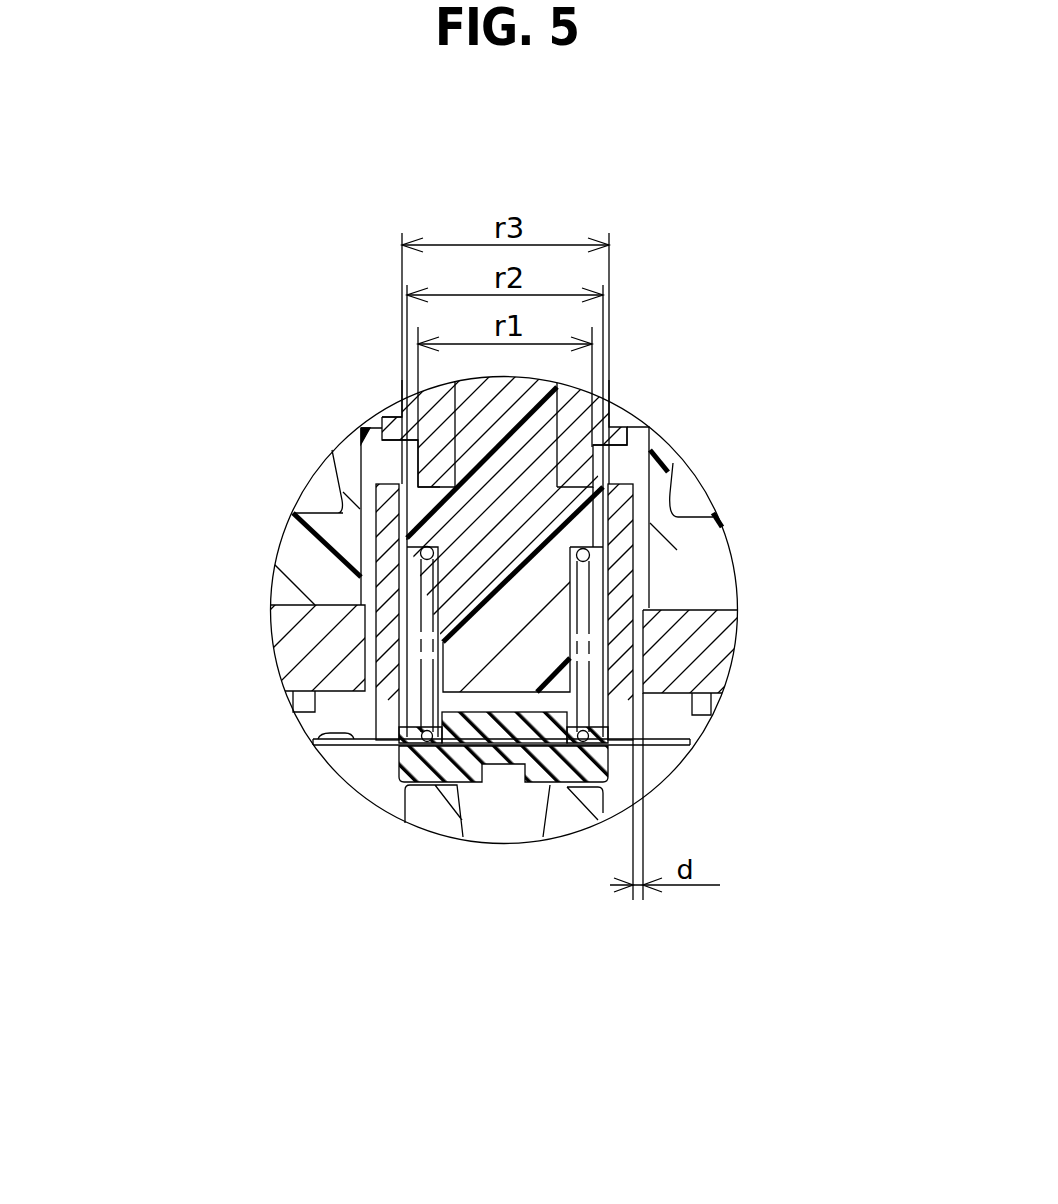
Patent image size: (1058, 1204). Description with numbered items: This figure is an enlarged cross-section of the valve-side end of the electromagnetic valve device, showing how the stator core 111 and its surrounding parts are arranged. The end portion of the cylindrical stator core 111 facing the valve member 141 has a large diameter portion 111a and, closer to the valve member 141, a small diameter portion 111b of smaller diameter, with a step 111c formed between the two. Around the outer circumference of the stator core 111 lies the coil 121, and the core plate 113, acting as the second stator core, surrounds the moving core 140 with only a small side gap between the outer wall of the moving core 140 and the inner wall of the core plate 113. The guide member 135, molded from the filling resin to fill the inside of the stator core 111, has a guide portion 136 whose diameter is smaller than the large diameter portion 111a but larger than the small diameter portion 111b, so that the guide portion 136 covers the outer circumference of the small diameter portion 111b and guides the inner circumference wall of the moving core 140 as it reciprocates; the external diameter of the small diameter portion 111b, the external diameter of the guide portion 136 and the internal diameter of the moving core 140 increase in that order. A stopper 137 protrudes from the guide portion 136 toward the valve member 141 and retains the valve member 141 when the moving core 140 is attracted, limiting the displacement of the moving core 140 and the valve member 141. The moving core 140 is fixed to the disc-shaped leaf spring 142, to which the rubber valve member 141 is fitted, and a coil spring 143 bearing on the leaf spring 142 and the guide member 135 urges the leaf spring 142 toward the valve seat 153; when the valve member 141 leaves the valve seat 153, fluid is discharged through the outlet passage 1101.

The stator core 111 is at (605, 447).
The large diameter portion 111a is at (392, 417).
The small diameter portion 111b is at (397, 483).
The step 111c is at (400, 440).
The core plate 113 is at (718, 655).
The coil 121 is at (685, 490).
The guide member 135 is at (482, 430).
The guide portion 136 is at (593, 517).
The stopper 137 is at (537, 710).
The moving core 140 is at (624, 556).
The valve member 141 is at (407, 768).
The leaf spring 142 is at (317, 740).
The coil spring 143 is at (423, 585).
The valve seat 153 is at (418, 730).
The outlet passage 1101 is at (502, 818).